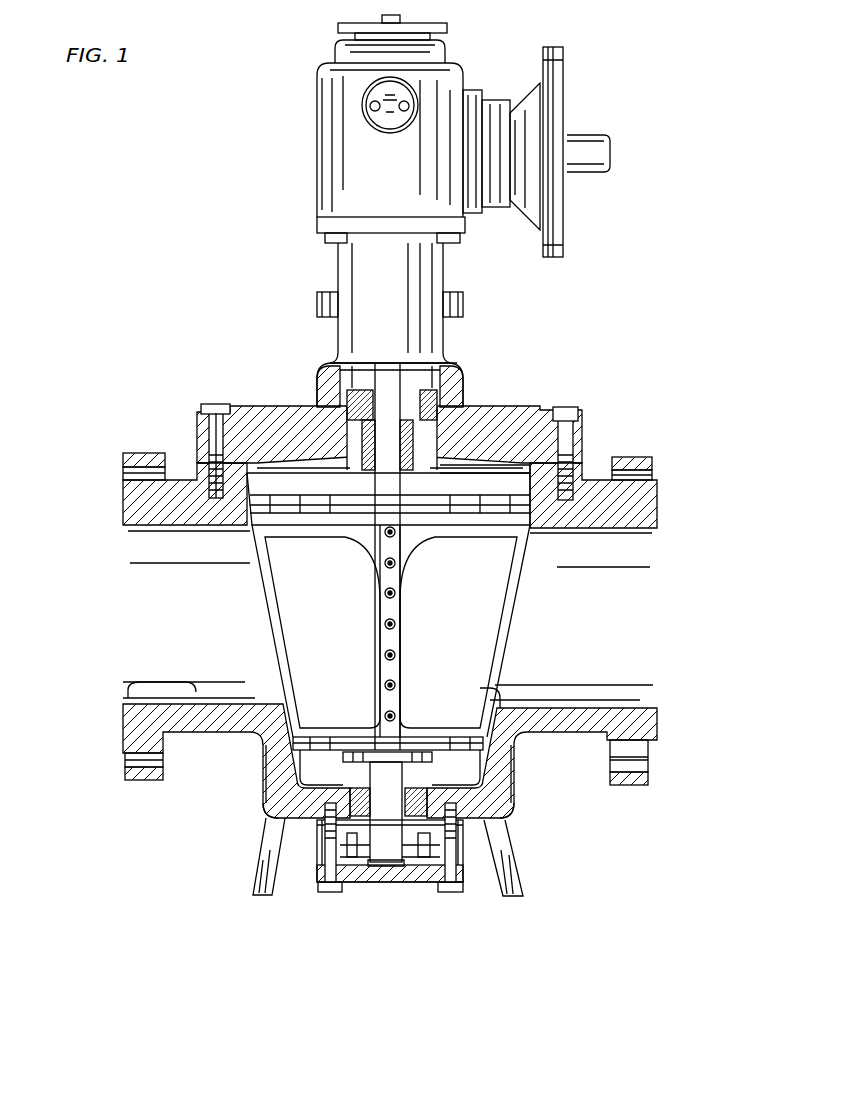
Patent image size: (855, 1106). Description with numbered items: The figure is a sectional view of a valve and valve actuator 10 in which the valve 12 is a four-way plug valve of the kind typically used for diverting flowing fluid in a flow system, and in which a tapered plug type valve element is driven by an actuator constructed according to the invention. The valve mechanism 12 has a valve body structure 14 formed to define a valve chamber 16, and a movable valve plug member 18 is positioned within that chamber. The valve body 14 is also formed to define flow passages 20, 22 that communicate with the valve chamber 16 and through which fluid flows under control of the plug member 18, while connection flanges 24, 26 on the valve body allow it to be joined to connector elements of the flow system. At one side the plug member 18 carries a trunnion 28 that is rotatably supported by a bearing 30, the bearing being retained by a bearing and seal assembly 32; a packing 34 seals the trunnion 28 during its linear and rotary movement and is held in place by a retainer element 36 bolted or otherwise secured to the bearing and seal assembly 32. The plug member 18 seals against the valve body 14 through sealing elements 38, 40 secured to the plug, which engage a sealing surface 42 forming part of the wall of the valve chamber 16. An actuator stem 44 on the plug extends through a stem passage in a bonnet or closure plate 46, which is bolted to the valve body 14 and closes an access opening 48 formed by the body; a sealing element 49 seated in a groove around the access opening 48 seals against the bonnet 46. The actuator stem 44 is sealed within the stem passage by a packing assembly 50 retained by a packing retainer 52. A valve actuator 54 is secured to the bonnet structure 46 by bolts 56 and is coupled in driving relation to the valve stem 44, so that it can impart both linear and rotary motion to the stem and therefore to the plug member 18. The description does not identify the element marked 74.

The valve and valve actuator 10 is at (680, 428).
The valve 12 is at (165, 812).
The valve body structure 14 is at (490, 795).
The valve chamber 16 is at (453, 773).
The valve plug member 18 is at (415, 552).
The flow passage 20 is at (182, 688).
The flow passage 22 is at (590, 700).
The connection flange 24 is at (125, 483).
The connection flange 26 is at (655, 500).
The trunnion 28 is at (493, 823).
The bearing 30 is at (355, 812).
The bearing and seal assembly 32 is at (462, 845).
The packing 34 is at (288, 840).
The retainer element 36 is at (405, 865).
The sealing element 38 is at (380, 631).
The sealing element 40 is at (400, 650).
The sealing surface 42 is at (490, 682).
The actuator stem 44 is at (430, 477).
The bonnet 46 is at (562, 407).
The access opening 48 is at (497, 463).
The sealing element 49 is at (197, 473).
The packing assembly 50 is at (325, 403).
The packing retainer 52 is at (335, 392).
The valve actuator 54 is at (600, 228).
The bolts 56 is at (460, 375).
The input shaft 74 is at (597, 132).